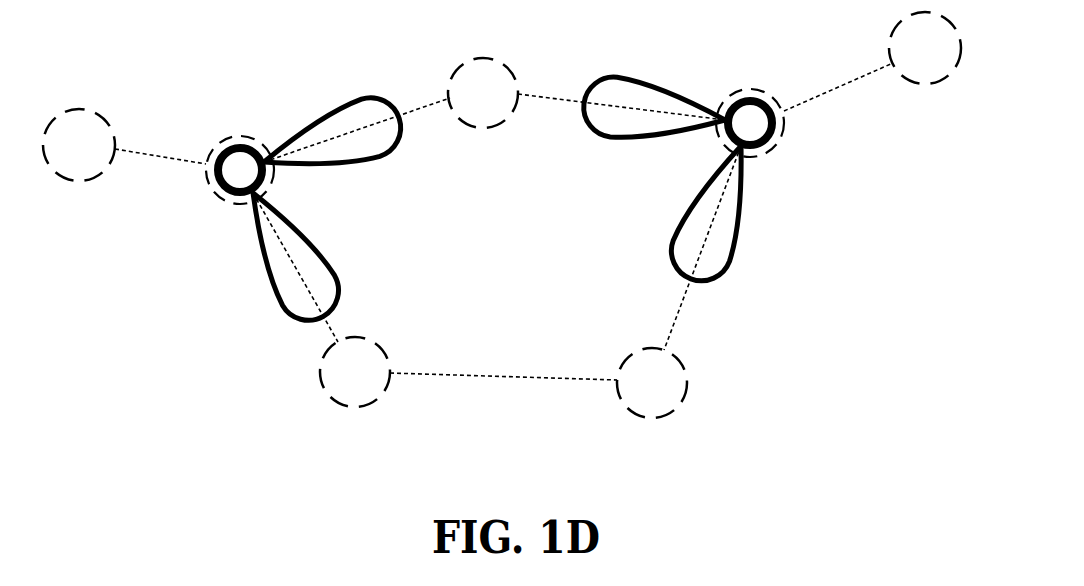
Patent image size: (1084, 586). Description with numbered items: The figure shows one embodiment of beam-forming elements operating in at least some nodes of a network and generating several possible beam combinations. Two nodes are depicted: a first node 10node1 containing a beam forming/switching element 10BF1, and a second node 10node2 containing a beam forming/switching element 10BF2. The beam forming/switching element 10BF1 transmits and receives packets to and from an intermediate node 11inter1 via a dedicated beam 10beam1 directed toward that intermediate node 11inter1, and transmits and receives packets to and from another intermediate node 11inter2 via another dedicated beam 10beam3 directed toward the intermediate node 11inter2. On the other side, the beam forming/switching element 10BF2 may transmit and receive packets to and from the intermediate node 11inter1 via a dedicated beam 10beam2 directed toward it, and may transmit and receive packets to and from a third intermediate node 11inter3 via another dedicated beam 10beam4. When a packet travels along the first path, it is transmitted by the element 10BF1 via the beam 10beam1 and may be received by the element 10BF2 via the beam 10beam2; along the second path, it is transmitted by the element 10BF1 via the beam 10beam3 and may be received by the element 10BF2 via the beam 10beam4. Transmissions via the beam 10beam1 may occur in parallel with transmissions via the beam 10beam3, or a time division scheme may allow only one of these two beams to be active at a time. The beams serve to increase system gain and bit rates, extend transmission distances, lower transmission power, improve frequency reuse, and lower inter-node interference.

The node 10node1 is at (230, 203).
The node 10node2 is at (777, 60).
The beam forming/switching element 10BF1 is at (234, 136).
The beam forming/switching element 10BF2 is at (776, 148).
The dedicated beam 10beam1 is at (367, 157).
The dedicated beam 10beam2 is at (617, 133).
The dedicated beam 10beam3 is at (333, 278).
The dedicated beam 10beam4 is at (673, 272).
The intermediate node 11inter1 is at (455, 75).
The intermediate node 11inter2 is at (325, 387).
The intermediate node 11inter3 is at (623, 397).